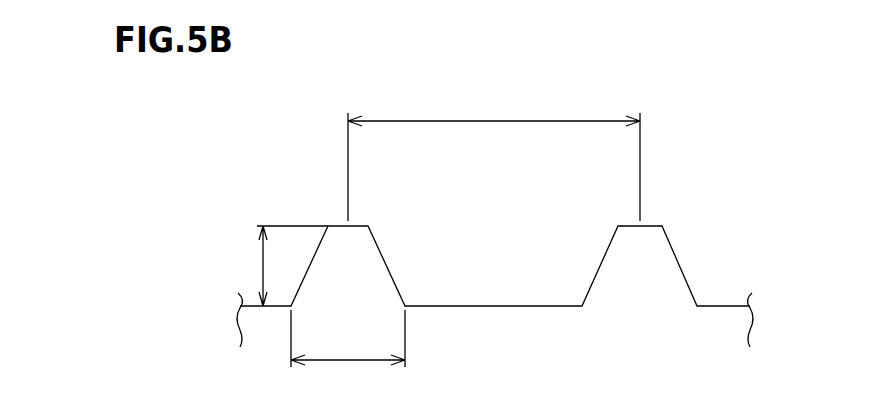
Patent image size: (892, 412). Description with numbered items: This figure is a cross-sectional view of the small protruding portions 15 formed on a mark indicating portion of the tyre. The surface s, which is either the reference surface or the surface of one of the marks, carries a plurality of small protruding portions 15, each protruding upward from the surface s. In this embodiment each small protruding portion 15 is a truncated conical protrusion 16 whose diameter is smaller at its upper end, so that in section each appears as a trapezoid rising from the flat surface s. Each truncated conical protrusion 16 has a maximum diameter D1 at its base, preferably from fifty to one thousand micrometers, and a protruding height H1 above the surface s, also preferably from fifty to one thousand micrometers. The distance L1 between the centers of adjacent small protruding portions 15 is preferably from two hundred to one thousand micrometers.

The small protruding portion 15 is at (495, 237).
The truncated conical protrusion 16 is at (395, 265).
The surface S is at (493, 306).
The distance between centers L1 is at (494, 155).
The protruding height H1 is at (277, 266).
The maximum diameter D1 is at (348, 351).